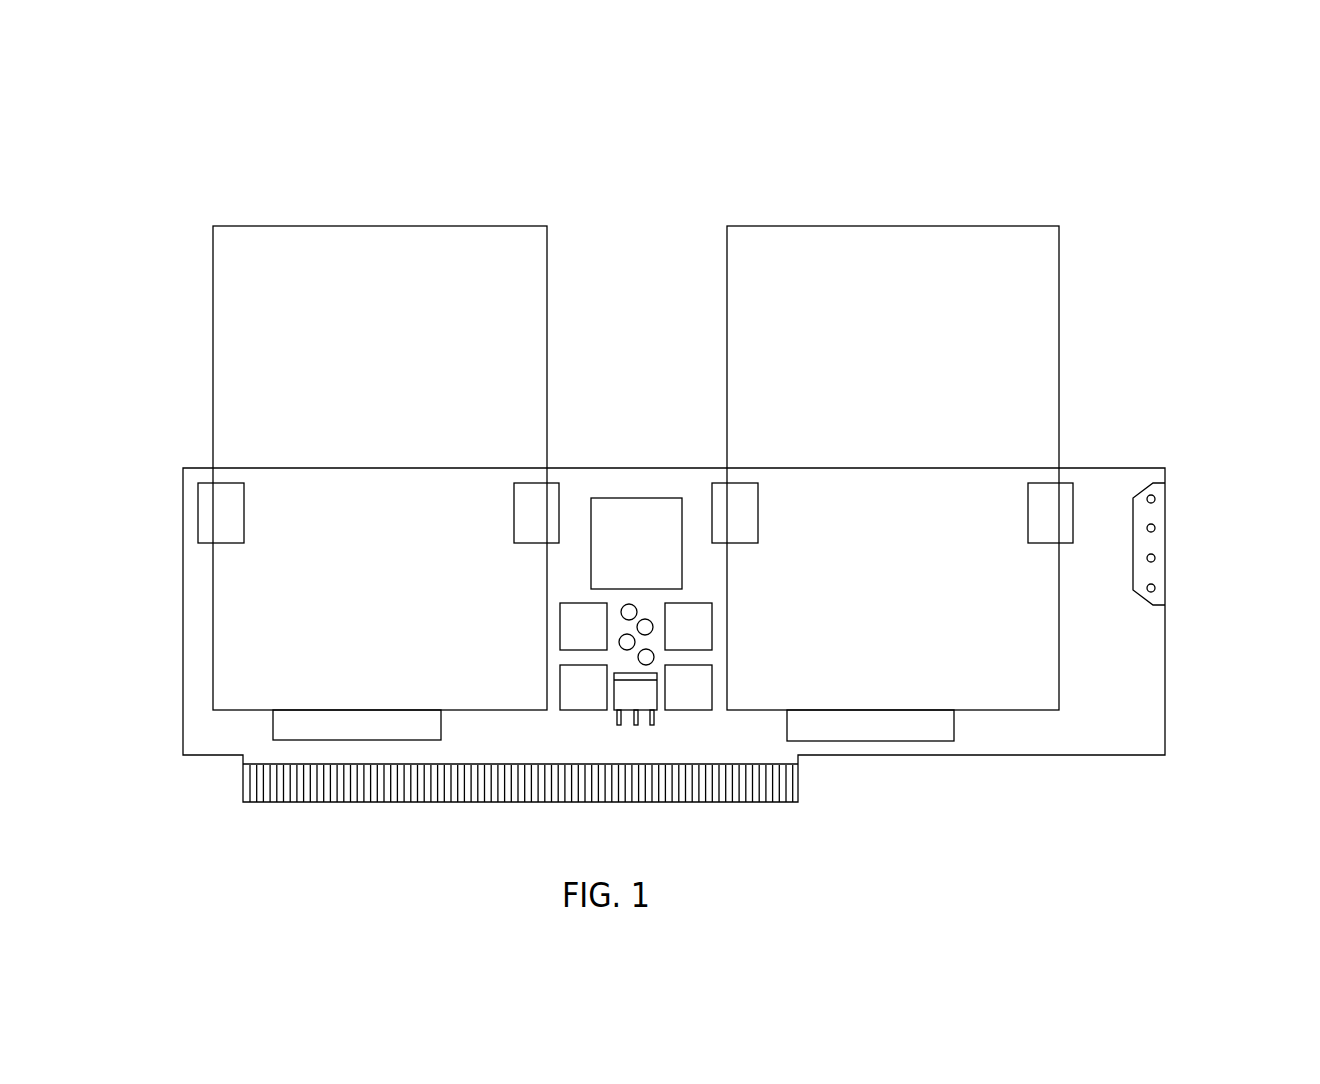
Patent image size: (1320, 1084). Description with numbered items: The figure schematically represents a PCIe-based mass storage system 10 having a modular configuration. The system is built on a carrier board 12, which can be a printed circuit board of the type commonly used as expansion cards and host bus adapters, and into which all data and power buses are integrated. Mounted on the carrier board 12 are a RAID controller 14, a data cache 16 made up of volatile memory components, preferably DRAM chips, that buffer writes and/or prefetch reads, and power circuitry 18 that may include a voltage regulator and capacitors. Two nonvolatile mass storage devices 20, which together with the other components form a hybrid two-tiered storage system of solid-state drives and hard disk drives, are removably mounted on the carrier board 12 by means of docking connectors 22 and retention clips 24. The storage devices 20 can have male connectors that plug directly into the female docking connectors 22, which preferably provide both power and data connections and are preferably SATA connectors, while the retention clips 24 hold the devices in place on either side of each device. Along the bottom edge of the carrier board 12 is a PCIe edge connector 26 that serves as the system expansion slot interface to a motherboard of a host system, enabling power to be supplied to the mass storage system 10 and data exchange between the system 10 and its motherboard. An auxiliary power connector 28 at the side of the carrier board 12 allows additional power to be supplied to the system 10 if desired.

The mass storage system 10 is at (983, 175).
The carrier board 12 is at (1137, 729).
The RAID controller 14 is at (651, 566).
The data cache 16 is at (702, 701).
The power circuitry 18 is at (688, 737).
The mass storage devices 20 is at (907, 347).
The docking connectors 22 is at (907, 665).
The retention clips 24 is at (1037, 502).
The PCIe edge connector 26 is at (287, 797).
The auxiliary power connector 28 is at (1157, 542).